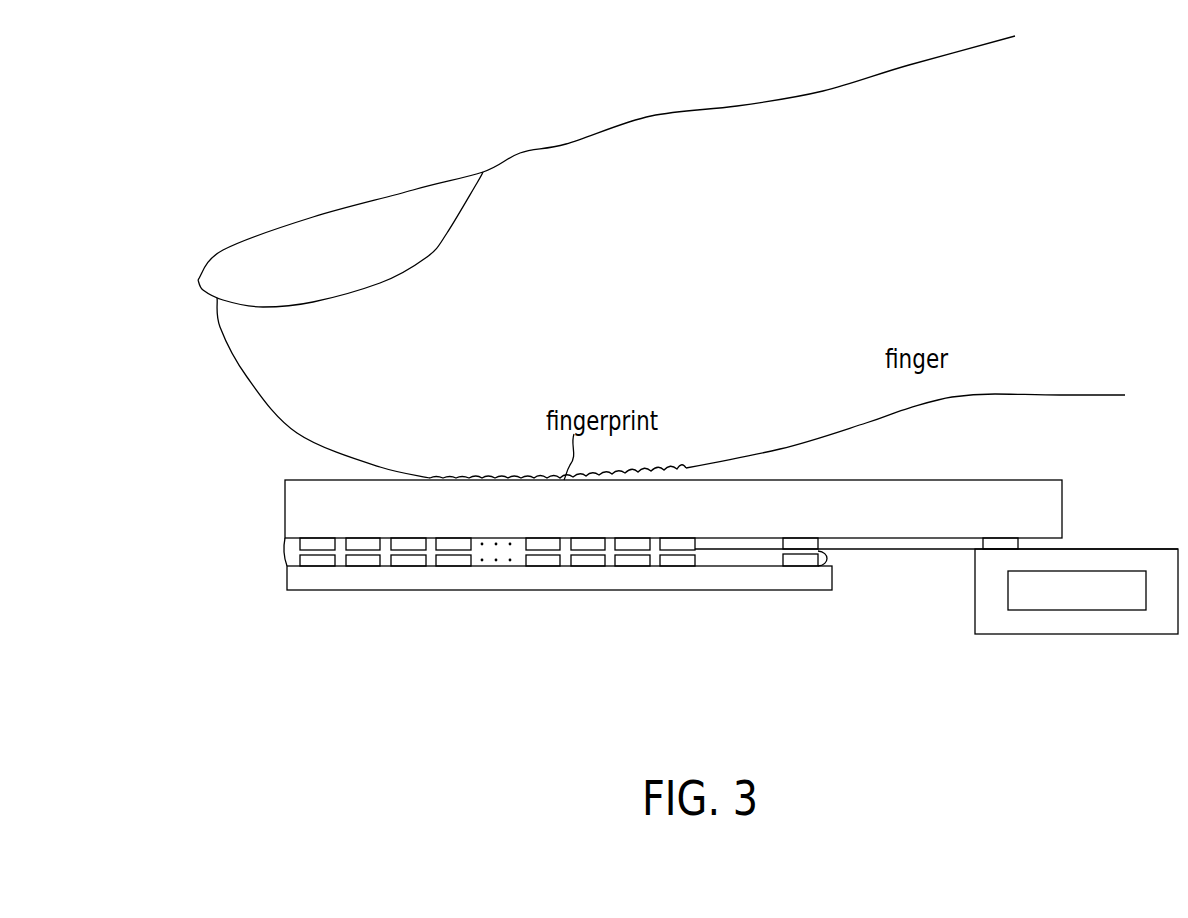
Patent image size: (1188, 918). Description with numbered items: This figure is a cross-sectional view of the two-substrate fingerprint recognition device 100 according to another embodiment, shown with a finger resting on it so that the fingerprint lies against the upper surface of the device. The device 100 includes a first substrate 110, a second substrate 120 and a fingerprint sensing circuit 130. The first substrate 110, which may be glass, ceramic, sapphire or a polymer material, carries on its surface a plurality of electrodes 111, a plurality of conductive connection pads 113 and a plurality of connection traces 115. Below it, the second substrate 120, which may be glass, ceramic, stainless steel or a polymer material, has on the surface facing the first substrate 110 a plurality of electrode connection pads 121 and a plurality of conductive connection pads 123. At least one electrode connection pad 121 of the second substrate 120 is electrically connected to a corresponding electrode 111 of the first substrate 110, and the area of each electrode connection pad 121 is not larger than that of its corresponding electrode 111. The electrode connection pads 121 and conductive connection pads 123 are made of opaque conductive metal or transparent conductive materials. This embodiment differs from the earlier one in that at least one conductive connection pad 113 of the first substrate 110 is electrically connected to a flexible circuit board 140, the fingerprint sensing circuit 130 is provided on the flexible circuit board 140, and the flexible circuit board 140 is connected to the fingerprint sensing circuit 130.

The two-substrate fingerprint recognition device 100 is at (925, 651).
The first substrate 110 is at (1063, 510).
The electrodes 111 is at (319, 537).
The conductive connection pads 113 is at (803, 537).
The connection traces 115 is at (878, 546).
The second substrate 120 is at (455, 592).
The electrode connection pads 121 is at (318, 568).
The conductive connection pads 123 is at (802, 568).
The fingerprint sensing circuit 130 is at (1062, 612).
The flexible circuit board 140 is at (1133, 636).